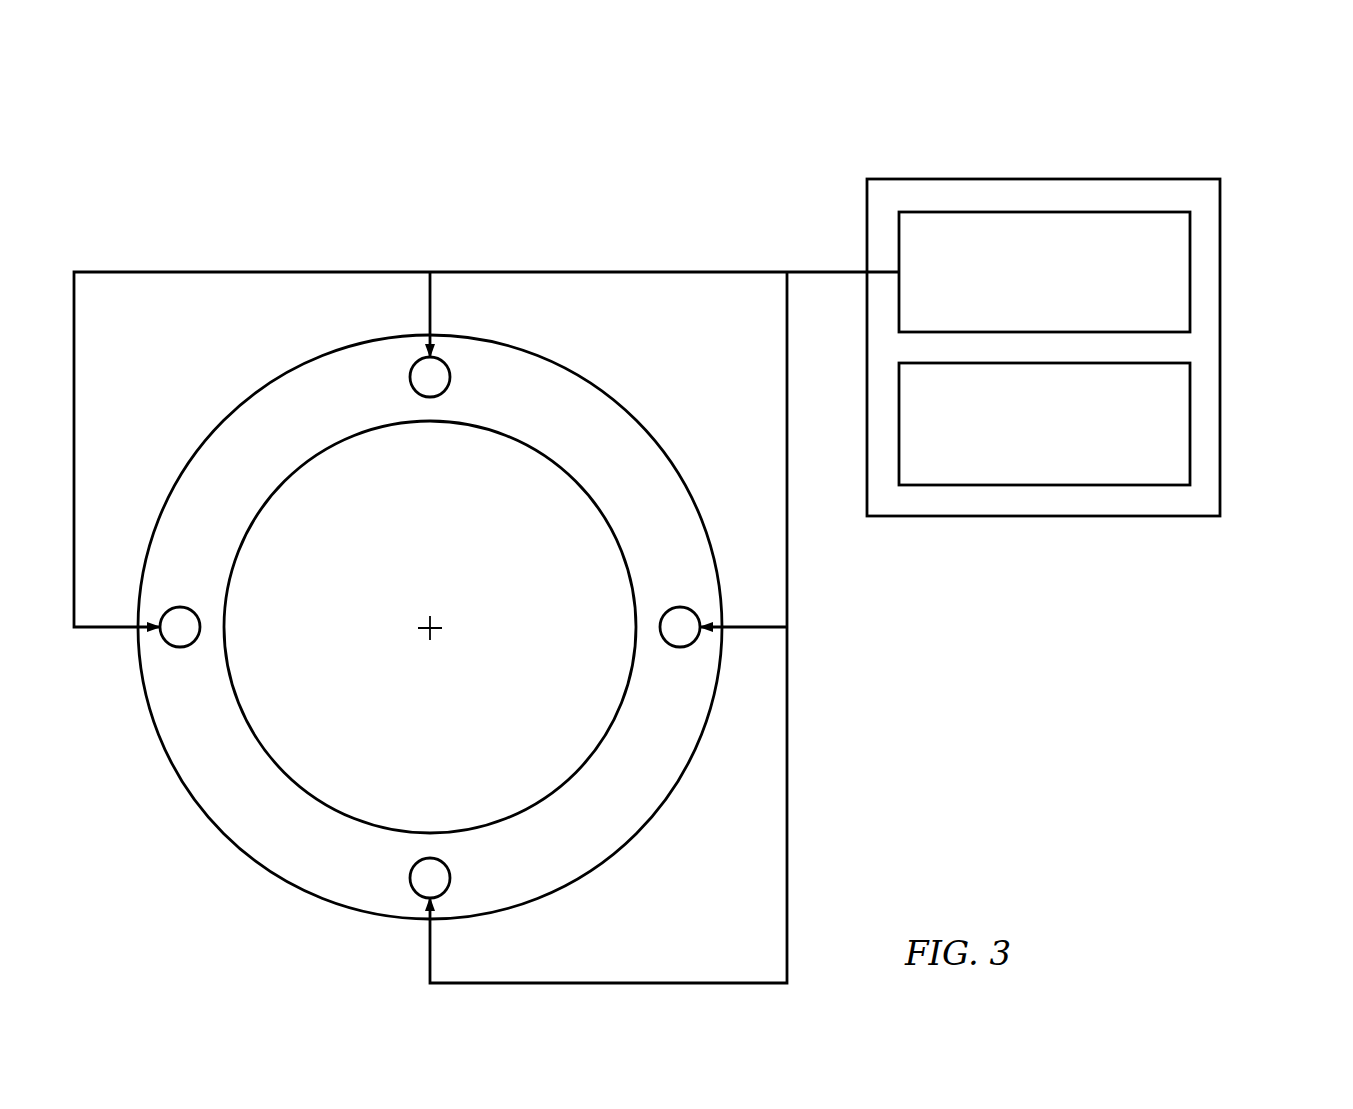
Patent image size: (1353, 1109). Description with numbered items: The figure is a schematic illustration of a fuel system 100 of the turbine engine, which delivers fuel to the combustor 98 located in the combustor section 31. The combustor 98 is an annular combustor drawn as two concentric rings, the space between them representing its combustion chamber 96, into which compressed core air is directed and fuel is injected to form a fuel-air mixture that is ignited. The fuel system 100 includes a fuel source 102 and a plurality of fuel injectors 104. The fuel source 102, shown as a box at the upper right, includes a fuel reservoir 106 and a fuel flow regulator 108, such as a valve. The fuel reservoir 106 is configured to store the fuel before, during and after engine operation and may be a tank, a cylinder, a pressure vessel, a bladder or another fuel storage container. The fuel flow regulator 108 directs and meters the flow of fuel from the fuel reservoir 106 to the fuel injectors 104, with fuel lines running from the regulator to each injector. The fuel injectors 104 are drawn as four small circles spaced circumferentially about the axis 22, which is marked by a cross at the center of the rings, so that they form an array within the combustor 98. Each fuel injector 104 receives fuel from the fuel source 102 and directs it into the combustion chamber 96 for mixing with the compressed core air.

The fuel system 100 is at (1160, 143).
The fuel source 102 is at (1232, 254).
The fuel flow regulator 108 is at (1064, 303).
The fuel reservoir 106 is at (1064, 456).
The combustor section 31 is at (573, 325).
The combustor 98 is at (623, 396).
The combustion chamber 96 is at (608, 448).
The fuel injectors 104 is at (430, 397).
The axis 22 is at (433, 634).